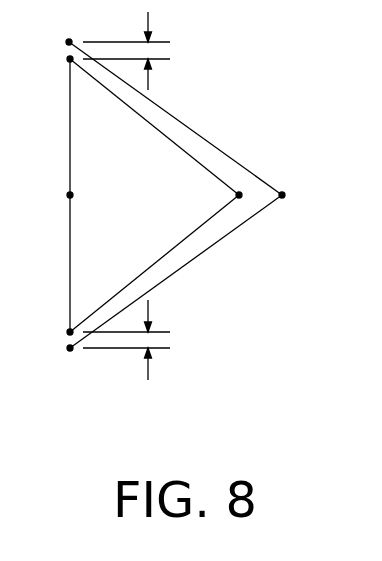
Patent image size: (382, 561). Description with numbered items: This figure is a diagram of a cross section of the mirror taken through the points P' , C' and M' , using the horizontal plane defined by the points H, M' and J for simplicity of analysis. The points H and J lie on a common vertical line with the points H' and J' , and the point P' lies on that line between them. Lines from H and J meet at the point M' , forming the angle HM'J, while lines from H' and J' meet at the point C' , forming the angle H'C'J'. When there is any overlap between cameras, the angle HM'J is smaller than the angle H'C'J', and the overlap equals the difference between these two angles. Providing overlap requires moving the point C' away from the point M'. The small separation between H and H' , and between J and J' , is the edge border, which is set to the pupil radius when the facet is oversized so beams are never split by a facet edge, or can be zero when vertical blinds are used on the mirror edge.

The point H is at (67, 30).
The point H' is at (55, 73).
The point P' is at (81, 197).
The point C' is at (222, 197).
The point M' is at (294, 197).
The point J' is at (56, 324).
The point J is at (68, 363).